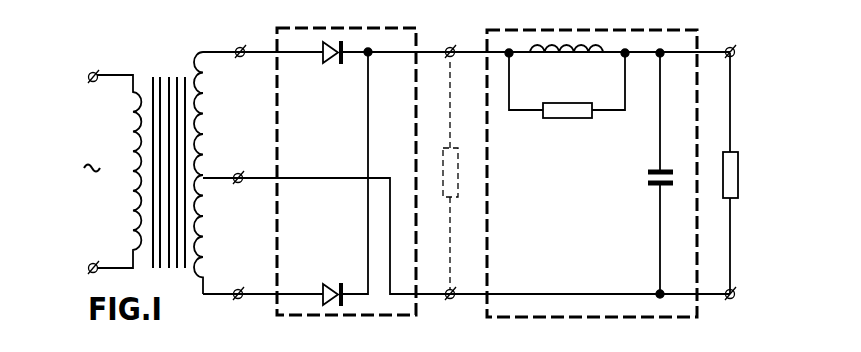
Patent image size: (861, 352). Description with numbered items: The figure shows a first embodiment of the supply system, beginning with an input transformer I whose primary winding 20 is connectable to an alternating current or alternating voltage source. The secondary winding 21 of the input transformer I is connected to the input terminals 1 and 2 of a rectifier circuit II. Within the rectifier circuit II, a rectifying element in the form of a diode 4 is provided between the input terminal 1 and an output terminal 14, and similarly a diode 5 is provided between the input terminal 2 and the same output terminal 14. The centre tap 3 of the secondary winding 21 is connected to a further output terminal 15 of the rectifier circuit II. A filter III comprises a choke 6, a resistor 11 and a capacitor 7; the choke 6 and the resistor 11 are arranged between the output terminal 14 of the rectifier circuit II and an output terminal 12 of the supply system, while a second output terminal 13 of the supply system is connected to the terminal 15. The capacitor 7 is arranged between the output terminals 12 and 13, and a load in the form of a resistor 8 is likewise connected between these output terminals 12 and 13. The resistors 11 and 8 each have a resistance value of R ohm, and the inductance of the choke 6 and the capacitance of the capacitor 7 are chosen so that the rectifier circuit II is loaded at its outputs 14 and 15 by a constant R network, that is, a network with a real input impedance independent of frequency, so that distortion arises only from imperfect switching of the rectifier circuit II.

The input terminal 1 is at (238, 48).
The input terminal 2 is at (237, 290).
The centre tap 3 is at (237, 174).
The diode 4 is at (329, 63).
The diode 5 is at (329, 283).
The choke 6 is at (557, 50).
The capacitor 7 is at (652, 185).
The resistor 8 is at (722, 160).
The resistor 11 is at (579, 118).
The output terminal 12 is at (727, 48).
The second output terminal 13 is at (734, 298).
The output terminal 14 is at (449, 48).
The output terminal 15 is at (452, 297).
The primary winding 20 is at (141, 199).
The secondary winding 21 is at (201, 230).
The input transformer I is at (168, 70).
The rectifier circuit II is at (277, 4).
The filter III is at (500, 6).
The resistance value R is at (446, 187).